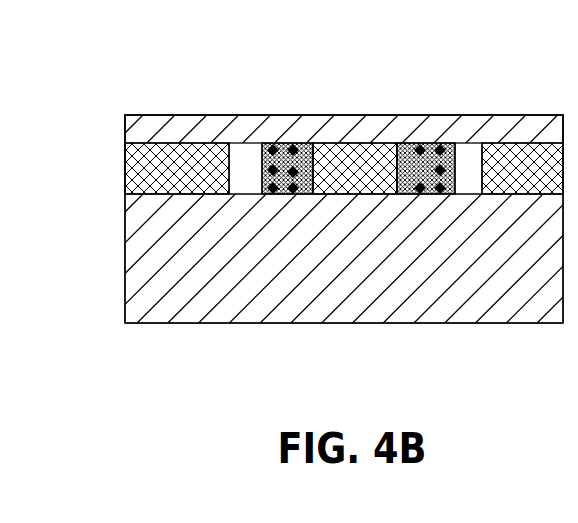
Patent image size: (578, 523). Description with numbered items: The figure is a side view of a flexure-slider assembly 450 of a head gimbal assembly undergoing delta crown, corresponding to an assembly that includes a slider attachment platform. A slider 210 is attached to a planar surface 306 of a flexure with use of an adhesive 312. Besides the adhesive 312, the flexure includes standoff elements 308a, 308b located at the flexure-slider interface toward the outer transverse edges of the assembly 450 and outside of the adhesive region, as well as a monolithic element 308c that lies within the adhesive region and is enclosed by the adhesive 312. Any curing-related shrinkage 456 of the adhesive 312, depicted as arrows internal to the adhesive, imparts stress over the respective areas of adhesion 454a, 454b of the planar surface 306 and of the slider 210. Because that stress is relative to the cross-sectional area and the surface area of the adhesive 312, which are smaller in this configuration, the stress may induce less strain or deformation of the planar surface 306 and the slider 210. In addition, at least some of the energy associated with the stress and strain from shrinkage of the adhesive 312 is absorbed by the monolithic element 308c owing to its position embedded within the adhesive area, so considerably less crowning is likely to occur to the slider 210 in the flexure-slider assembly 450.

The slider 210 is at (127, 228).
The planar surface 306 is at (478, 143).
The standoff element 308a is at (180, 153).
The standoff element 308b is at (529, 152).
The monolithic element 308c is at (352, 143).
The adhesive 312 is at (407, 195).
The flexure-slider assembly 450 is at (348, 65).
The area of adhesion 454a is at (259, 105).
The area of adhesion 454b is at (398, 106).
The curing-related shrinkage 456 is at (290, 195).